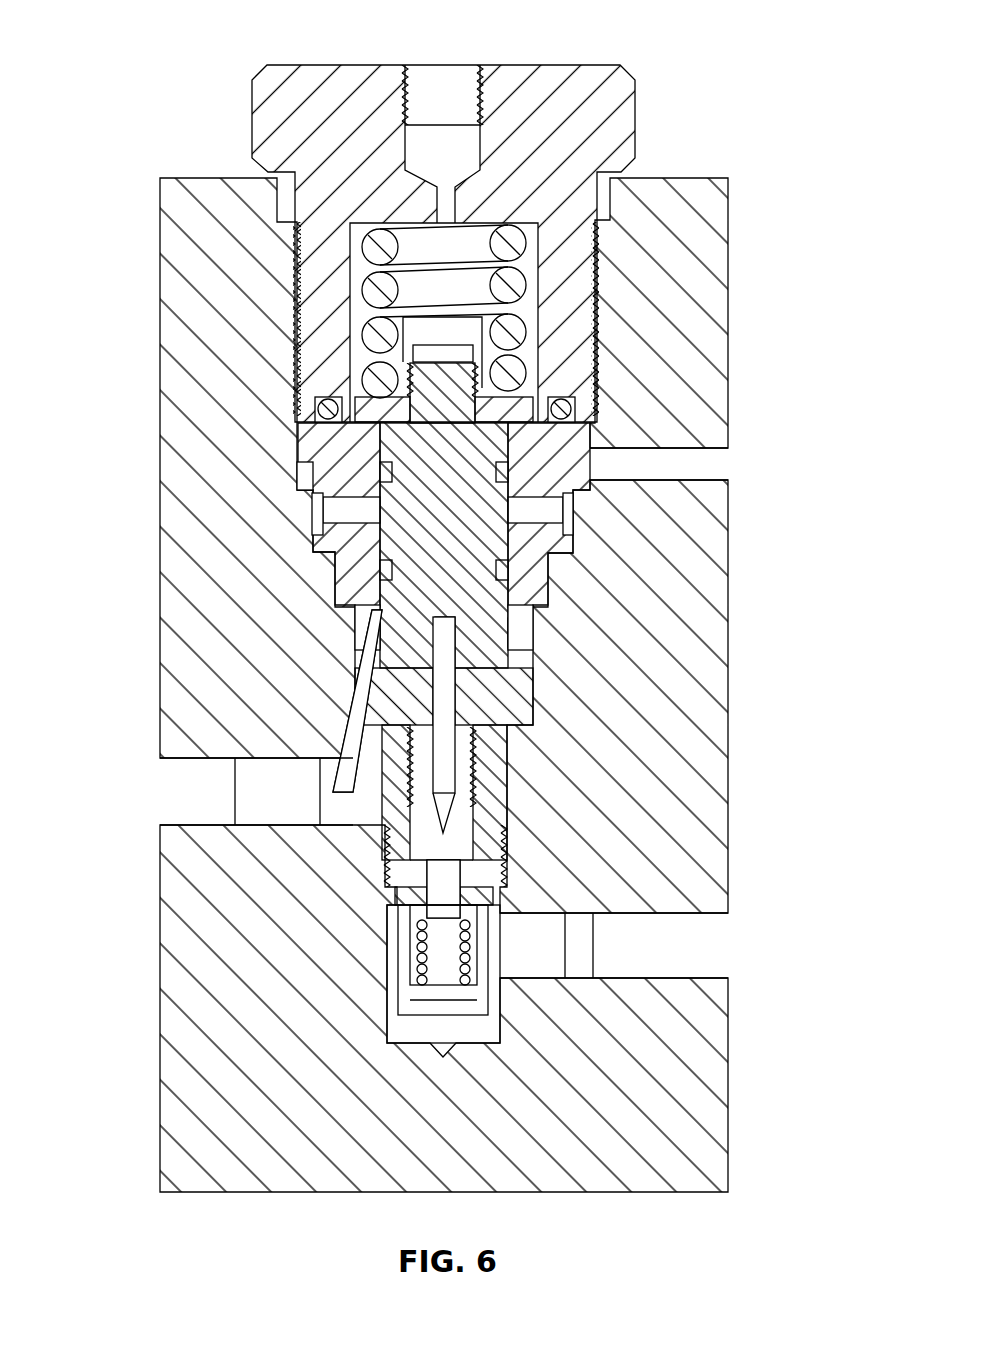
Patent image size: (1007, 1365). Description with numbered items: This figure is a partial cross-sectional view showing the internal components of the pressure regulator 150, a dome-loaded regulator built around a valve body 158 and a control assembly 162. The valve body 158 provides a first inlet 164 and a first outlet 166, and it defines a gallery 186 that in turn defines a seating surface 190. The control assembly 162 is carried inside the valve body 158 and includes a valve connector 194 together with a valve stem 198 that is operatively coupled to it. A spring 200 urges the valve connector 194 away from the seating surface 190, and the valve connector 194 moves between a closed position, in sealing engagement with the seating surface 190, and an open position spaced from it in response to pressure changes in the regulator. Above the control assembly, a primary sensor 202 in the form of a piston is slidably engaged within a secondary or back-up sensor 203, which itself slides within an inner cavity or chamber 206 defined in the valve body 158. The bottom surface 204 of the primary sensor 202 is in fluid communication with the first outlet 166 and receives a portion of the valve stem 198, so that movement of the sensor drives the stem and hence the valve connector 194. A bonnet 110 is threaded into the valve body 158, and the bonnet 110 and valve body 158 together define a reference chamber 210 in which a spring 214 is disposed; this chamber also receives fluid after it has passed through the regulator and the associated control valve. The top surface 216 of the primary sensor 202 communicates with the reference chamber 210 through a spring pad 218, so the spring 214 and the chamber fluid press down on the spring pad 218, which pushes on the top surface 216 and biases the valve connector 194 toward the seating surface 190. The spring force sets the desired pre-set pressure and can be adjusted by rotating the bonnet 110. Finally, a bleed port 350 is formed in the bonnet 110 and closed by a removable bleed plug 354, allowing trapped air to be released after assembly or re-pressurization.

The bonnet 110 is at (266, 62).
The pressure regulator 150 is at (722, 124).
The valve body 158 is at (728, 1080).
The control assembly 162 is at (353, 772).
The first inlet 164 is at (728, 925).
The first outlet 166 is at (160, 820).
The gallery 186 is at (388, 838).
The seating surface 190 is at (443, 889).
The valve connector 194 is at (510, 795).
The valve stem 198 is at (357, 701).
The spring 200 is at (405, 975).
The primary sensor 202 is at (363, 625).
The secondary sensor 203 is at (300, 468).
The bottom surface 204 is at (533, 690).
The inner cavity or chamber 206 is at (300, 445).
The reference chamber 210 is at (540, 300).
The spring 214 is at (537, 279).
The top surface 216 is at (535, 385).
The spring pad 218 is at (303, 408).
The bleed port 350 is at (483, 148).
The bleed plug 354 is at (462, 95).